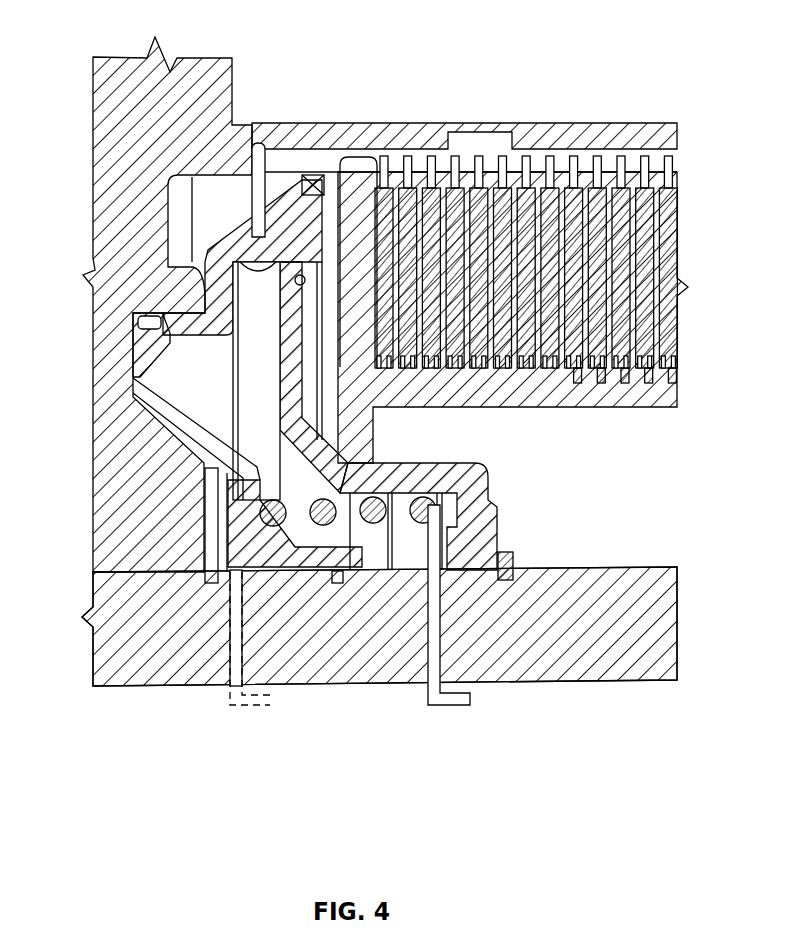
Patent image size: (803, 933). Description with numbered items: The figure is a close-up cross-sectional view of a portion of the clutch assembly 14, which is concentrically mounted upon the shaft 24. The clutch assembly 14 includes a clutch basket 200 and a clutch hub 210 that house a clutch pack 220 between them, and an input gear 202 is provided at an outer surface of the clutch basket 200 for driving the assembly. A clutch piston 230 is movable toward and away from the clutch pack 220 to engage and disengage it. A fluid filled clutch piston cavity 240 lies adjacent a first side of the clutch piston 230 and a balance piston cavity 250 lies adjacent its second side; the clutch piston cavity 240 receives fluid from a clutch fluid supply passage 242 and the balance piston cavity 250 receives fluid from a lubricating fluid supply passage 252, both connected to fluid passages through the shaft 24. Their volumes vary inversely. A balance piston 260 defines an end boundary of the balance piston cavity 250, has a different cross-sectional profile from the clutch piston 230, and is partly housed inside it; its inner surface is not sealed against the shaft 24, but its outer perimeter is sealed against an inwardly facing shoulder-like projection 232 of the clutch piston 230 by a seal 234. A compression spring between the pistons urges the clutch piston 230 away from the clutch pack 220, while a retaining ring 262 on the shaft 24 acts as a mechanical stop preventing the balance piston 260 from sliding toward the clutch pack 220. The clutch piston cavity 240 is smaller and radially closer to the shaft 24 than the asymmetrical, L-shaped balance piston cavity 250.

The clutch assembly 14 is at (621, 68).
The shaft 24 is at (560, 638).
The clutch basket 200 is at (413, 130).
The input gear 202 is at (133, 57).
The clutch hub 210 is at (548, 405).
The clutch pack 220 is at (654, 242).
The clutch piston 230 is at (165, 362).
The shoulder-like projection 232 is at (232, 248).
The seal 234 is at (298, 265).
The clutch piston cavity 240 is at (215, 518).
The clutch fluid supply passage 242 is at (243, 710).
The balance piston cavity 250 is at (230, 375).
The lubricating fluid supply passage 252 is at (445, 705).
The balance piston 260 is at (486, 480).
The retaining ring 262 is at (515, 562).